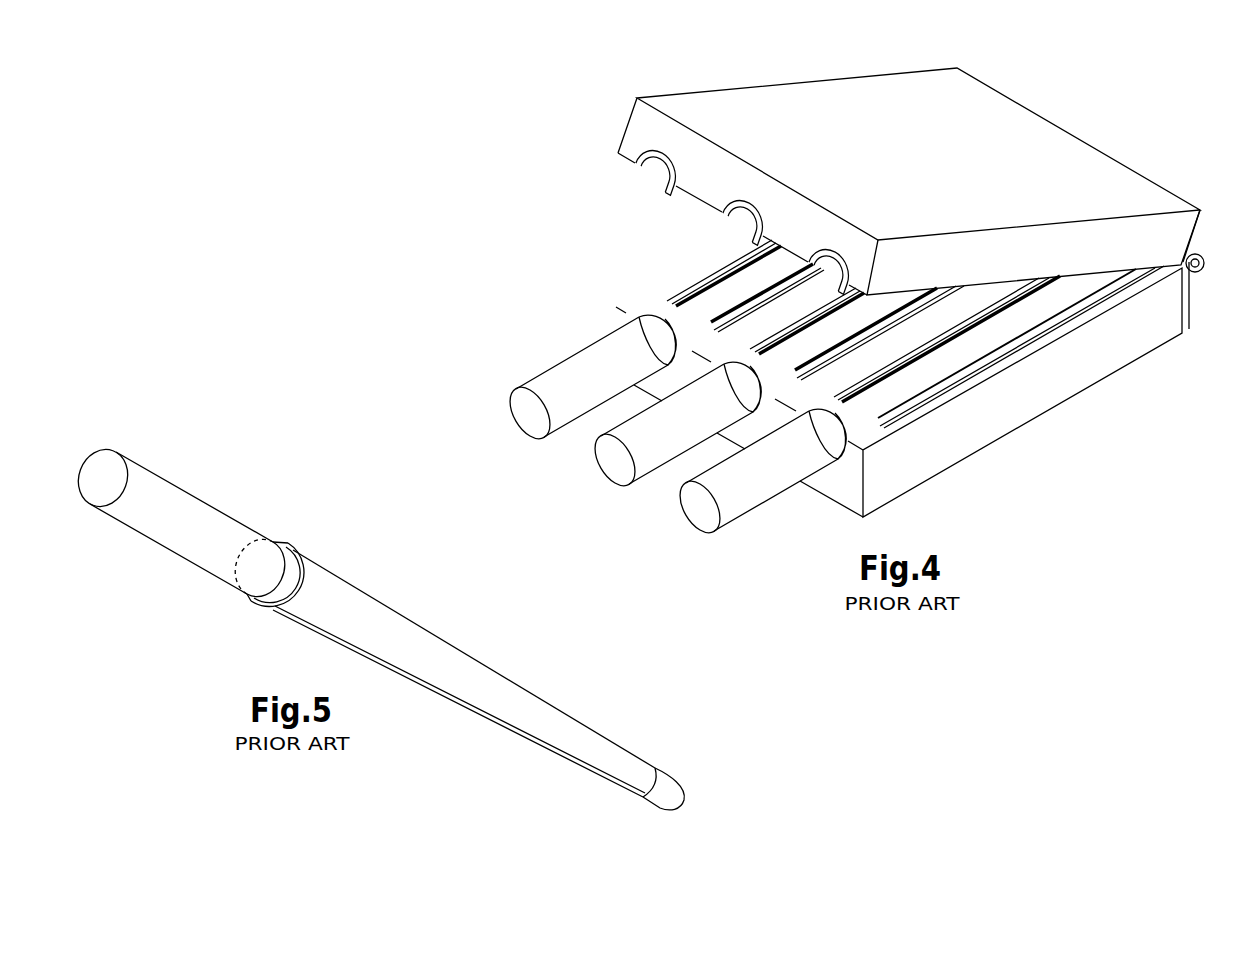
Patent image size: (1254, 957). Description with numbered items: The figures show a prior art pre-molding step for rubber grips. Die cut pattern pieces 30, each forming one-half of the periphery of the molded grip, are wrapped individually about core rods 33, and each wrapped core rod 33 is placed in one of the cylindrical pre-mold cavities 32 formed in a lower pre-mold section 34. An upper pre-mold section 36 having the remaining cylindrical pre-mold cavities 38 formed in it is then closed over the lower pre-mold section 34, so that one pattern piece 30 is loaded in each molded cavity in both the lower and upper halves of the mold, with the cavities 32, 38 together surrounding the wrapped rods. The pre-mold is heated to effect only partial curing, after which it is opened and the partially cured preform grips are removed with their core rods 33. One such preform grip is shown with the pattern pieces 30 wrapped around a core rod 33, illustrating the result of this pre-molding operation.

In FIG. 4, the pattern piece 30 is at (819, 265).
In FIG. 5, the pattern piece 30 is at (425, 616).
In FIG. 4, the pre-mold cavity 32 is at (690, 362).
In FIG. 4, the core rod 33 is at (612, 461).
In FIG. 5, the core rod 33 is at (173, 485).
In FIG. 4, the pre-mold section 34 is at (1022, 426).
In FIG. 4, the upper pre-mold section 36 is at (741, 87).
In FIG. 4, the remaining pre-mold cavity 38 is at (680, 167).